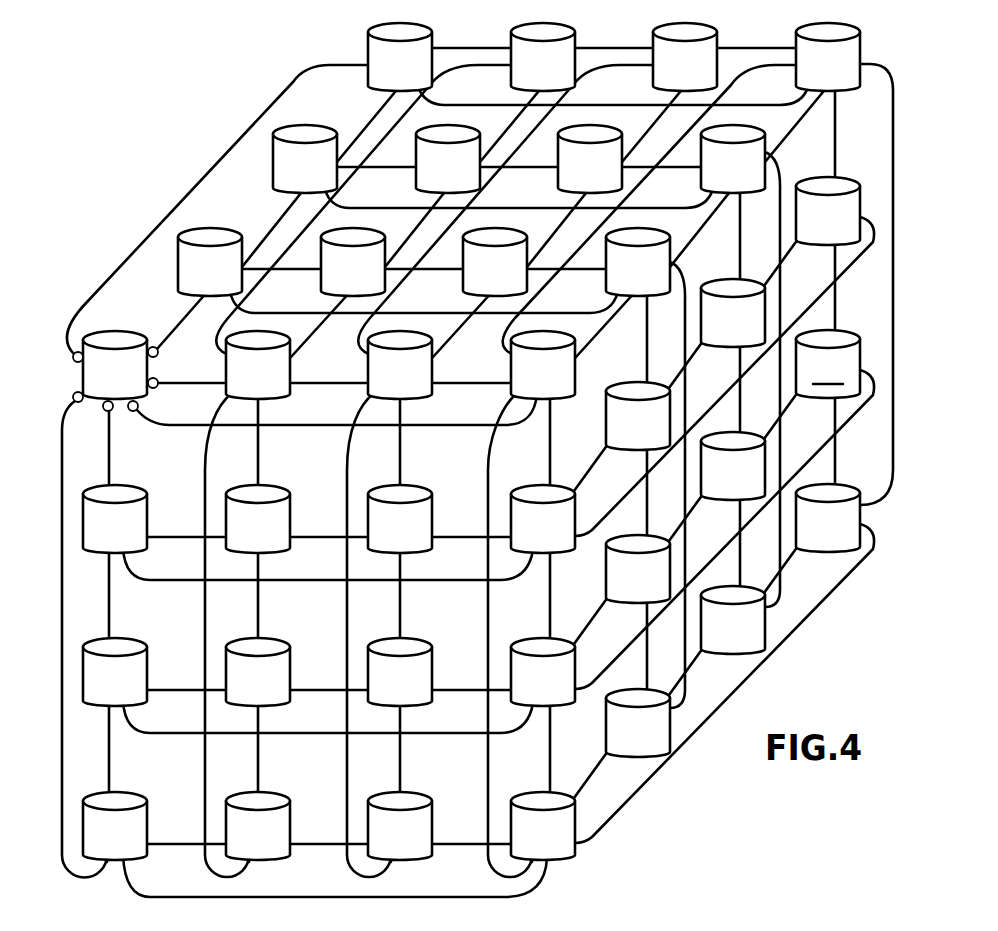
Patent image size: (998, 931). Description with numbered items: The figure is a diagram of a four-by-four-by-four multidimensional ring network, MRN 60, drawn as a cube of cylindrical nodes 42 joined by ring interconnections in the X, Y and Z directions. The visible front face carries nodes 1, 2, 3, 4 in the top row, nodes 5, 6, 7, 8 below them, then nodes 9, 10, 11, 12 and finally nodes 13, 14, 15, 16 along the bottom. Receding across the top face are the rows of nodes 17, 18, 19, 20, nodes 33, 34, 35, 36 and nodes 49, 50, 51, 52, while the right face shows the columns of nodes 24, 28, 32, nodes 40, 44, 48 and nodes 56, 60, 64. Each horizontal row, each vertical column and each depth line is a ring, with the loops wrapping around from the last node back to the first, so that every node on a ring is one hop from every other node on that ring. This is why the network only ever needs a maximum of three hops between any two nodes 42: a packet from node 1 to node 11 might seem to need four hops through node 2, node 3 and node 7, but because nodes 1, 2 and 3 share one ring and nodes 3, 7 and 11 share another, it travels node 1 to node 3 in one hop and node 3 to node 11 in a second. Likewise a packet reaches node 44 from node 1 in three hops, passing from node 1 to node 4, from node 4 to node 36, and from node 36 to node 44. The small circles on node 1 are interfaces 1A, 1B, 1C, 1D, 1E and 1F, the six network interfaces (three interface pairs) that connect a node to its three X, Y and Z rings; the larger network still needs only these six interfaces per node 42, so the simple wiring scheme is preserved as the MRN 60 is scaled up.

The node 1 is at (103, 385).
The node 2 is at (246, 385).
The node 3 is at (388, 385).
The node 4 is at (531, 385).
The node 5 is at (103, 539).
The node 6 is at (246, 539).
The node 7 is at (388, 539).
The node 8 is at (531, 539).
The node 9 is at (103, 692).
The node 10 is at (243, 692).
The node 11 is at (385, 692).
The node 12 is at (528, 692).
The node 13 is at (100, 846).
The node 14 is at (243, 846).
The node 15 is at (385, 846).
The node 16 is at (528, 846).
The node 17 is at (195, 282).
The node 18 is at (338, 282).
The node 19 is at (480, 282).
The node 20 is at (623, 282).
The node 24 is at (623, 436).
The node 28 is at (623, 589).
The node 32 is at (623, 743).
The node 33 is at (290, 179).
The node 34 is at (433, 179).
The node 35 is at (575, 179).
The node 36 is at (718, 179).
The node 40 is at (718, 333).
The node 44 is at (718, 486).
The node 48 is at (718, 640).
The node 49 is at (385, 77).
The node 50 is at (528, 77).
The node 51 is at (670, 77).
The node 52 is at (813, 77).
The node 56 is at (813, 231).
The multidimensional ring network (MRN) 60 is at (893, 216).
The node 64 is at (813, 538).
The nodes 42 is at (465, 472).
The interface 1A is at (63, 362).
The interface 1B is at (159, 340).
The interface 1C is at (165, 374).
The interface 1D is at (147, 411).
The interface 1E is at (117, 421).
The interface 1F is at (65, 396).